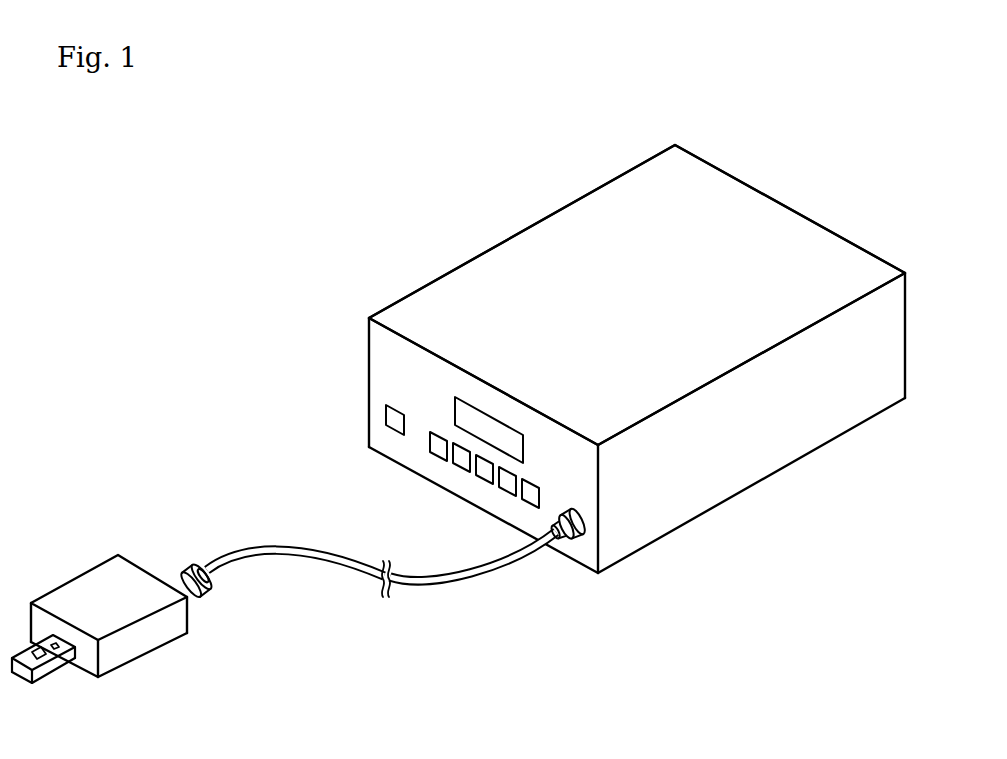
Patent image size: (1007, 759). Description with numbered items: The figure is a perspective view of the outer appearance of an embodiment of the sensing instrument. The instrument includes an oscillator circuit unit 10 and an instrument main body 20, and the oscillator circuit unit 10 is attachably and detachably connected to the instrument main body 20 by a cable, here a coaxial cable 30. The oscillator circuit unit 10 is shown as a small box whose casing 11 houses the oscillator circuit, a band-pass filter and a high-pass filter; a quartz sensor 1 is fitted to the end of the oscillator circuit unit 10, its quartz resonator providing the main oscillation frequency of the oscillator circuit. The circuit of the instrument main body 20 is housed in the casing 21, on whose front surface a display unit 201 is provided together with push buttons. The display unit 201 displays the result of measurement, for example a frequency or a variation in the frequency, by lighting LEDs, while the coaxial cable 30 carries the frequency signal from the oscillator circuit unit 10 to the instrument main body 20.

The quartz sensor 1 is at (50, 667).
The oscillator circuit unit 10 is at (131, 554).
The casing 11 is at (176, 629).
The instrument main body 20 is at (594, 350).
The casing 21 is at (627, 193).
The coaxial cable 30 is at (342, 574).
The display unit 201 is at (455, 412).